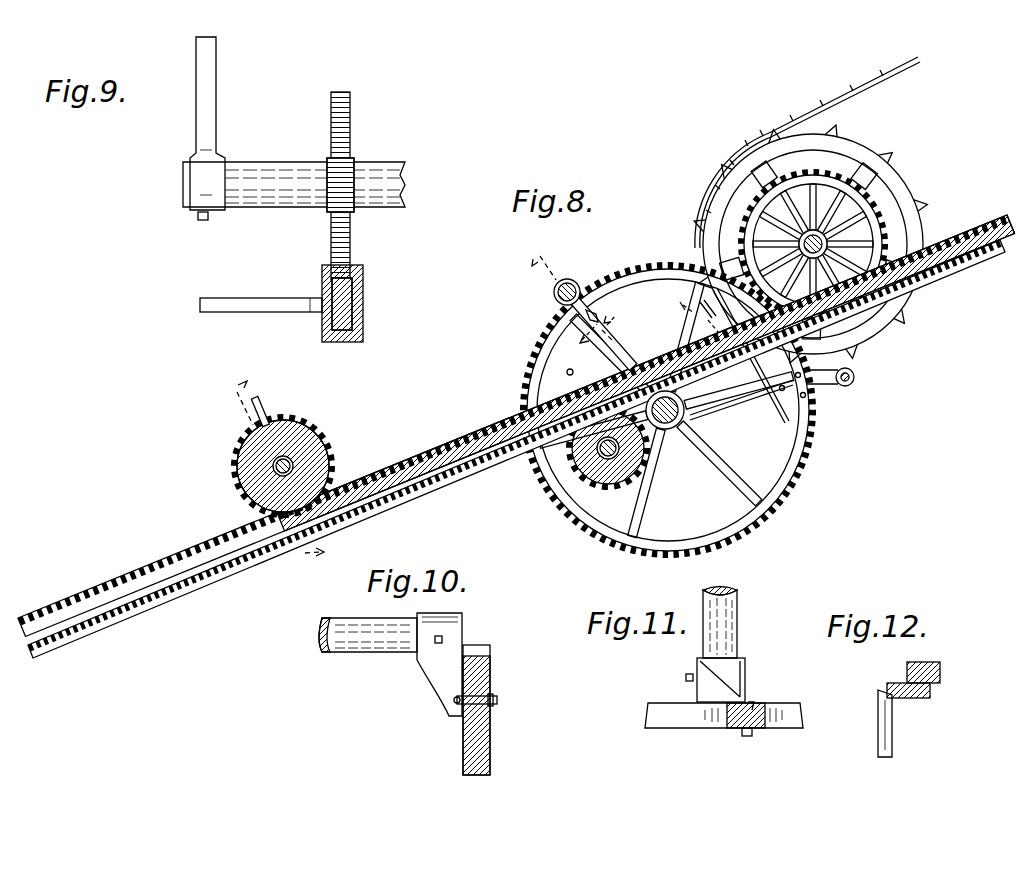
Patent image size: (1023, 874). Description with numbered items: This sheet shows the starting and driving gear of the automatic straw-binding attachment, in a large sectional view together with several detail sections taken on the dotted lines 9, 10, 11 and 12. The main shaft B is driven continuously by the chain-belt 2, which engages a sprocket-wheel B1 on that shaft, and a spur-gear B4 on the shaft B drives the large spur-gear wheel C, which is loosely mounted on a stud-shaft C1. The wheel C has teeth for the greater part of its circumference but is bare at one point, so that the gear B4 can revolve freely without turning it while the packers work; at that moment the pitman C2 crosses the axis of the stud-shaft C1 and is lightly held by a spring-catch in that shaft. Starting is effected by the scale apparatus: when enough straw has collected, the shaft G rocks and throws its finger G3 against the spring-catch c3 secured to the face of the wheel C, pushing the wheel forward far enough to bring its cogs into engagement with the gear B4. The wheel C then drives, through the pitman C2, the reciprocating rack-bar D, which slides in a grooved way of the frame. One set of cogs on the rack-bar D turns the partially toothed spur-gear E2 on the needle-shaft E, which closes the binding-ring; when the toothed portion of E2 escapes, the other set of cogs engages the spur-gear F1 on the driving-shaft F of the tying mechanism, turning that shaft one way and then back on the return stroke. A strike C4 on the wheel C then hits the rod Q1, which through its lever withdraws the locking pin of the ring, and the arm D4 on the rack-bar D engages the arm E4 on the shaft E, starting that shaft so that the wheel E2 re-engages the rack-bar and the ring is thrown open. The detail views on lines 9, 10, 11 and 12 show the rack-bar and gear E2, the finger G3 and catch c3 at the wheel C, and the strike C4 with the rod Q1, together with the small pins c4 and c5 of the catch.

In FIG. 8, the main shaft B is at (823, 240).
In FIG. 8, the sprocket-wheel B1 is at (857, 155).
In FIG. 8, the spur-gear B4 is at (865, 378).
In FIG. 8, the chain-belt 2 is at (822, 109).
In FIG. 8, the spur-gear wheel C is at (525, 373).
In FIG. 10, the spur-gear wheel C is at (482, 745).
In FIG. 11, the spur-gear wheel C is at (676, 722).
In FIG. 12, the spur-gear wheel C is at (938, 662).
In FIG. 8, the stud-shaft C1 is at (668, 430).
In FIG. 8, the pitman C2 is at (752, 397).
In FIG. 12, the strike C4 is at (913, 699).
In FIG. 8, the spring-catch c3 is at (597, 315).
In FIG. 10, the spring-catch c3 is at (497, 700).
In FIG. 11, the spring-catch c3 is at (750, 702).
In FIG. 8, the pawl c4 is at (707, 307).
In FIG. 10, the pin c5 is at (456, 698).
In FIG. 9, the rack-bar D is at (323, 313).
In FIG. 8, the rack-bar D is at (980, 247).
In FIG. 9, the arm on the rack-bar D4 is at (265, 305).
In FIG. 9, the needle-shaft E is at (405, 178).
In FIG. 8, the needle-shaft E is at (262, 455).
In FIG. 9, the spur-gear E2 is at (406, 238).
In FIG. 8, the spur-gear E2 is at (243, 488).
In FIG. 9, the arm on the shaft E E4 is at (214, 111).
In FIG. 8, the arm on the shaft E E4 is at (264, 406).
In FIG. 8, the driving-shaft of the tying mechanism F is at (618, 462).
In FIG. 8, the spur-gear F1 is at (621, 452).
In FIG. 8, the shaft of the scale apparatus G is at (554, 293).
In FIG. 10, the shaft of the scale apparatus G is at (360, 632).
In FIG. 11, the shaft of the scale apparatus G is at (723, 618).
In FIG. 8, the finger G3 is at (587, 303).
In FIG. 10, the finger G3 is at (447, 660).
In FIG. 11, the finger G3 is at (738, 668).
In FIG. 8, the rod Q1 is at (575, 372).
In FIG. 12, the rod Q1 is at (887, 713).
In FIG. 8, the section line 9- 9 is at (276, 470).
In FIG. 8, the section line 10- 10 is at (580, 293).
In FIG. 8, the section line 11- 11 is at (600, 329).
In FIG. 8, the section line 12- 12 is at (699, 315).